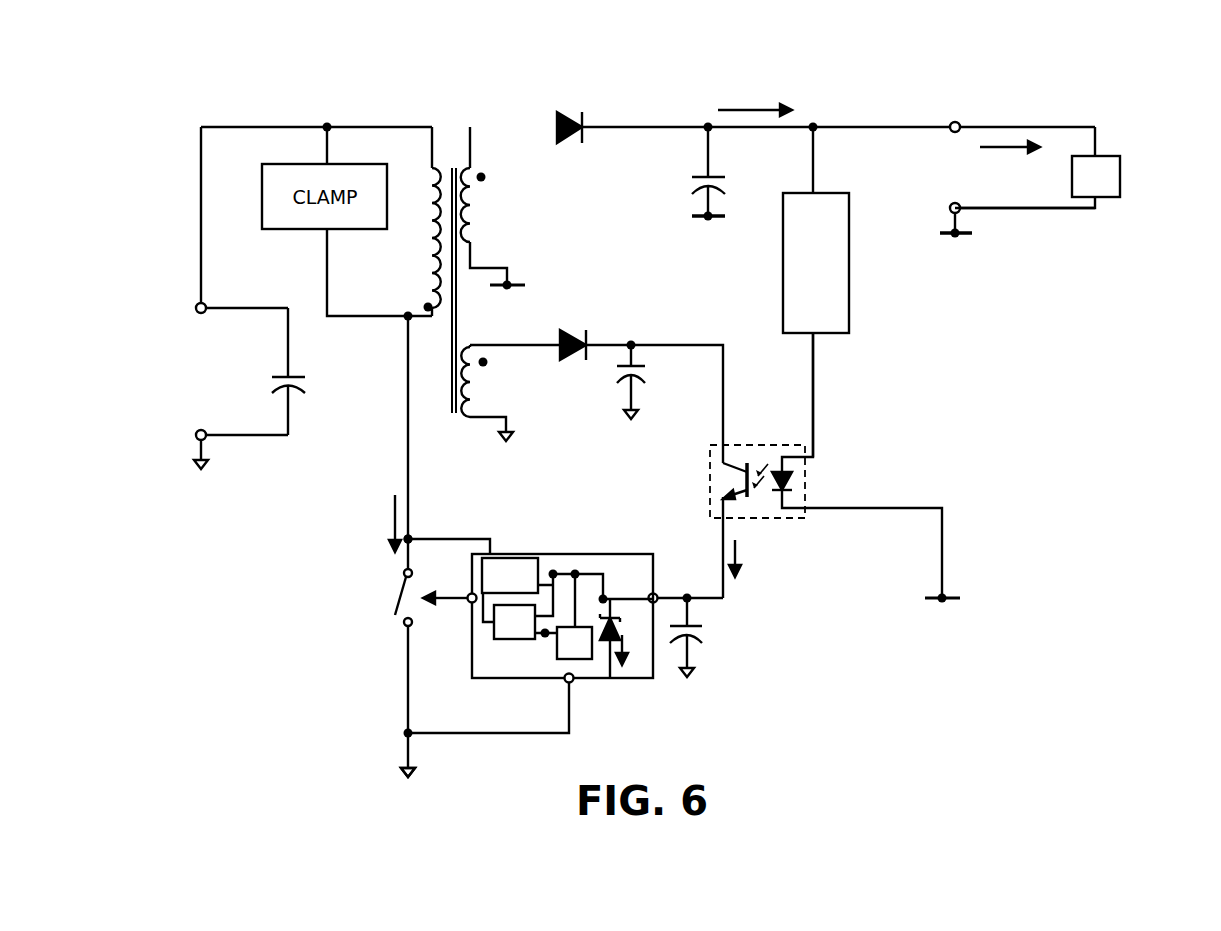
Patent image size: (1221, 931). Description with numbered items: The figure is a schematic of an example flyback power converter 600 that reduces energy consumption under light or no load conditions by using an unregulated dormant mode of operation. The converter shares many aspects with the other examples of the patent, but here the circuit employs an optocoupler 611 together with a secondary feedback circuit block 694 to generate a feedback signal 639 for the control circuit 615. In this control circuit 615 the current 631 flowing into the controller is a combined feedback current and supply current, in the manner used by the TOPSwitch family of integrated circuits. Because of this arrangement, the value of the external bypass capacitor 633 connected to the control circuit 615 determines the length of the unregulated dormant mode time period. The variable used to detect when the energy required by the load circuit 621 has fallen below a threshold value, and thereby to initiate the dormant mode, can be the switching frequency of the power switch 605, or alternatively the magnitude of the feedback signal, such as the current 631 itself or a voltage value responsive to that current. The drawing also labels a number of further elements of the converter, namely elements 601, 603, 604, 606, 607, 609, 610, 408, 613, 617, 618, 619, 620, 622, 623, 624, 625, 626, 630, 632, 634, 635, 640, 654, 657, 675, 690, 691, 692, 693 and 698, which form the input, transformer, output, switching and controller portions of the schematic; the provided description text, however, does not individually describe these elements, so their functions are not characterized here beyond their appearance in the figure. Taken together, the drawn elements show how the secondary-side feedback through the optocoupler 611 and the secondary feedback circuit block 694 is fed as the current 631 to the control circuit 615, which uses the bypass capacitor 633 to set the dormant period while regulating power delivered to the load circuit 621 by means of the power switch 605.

The power converter 600 is at (160, 80).
The input voltage source 601 is at (172, 390).
The primary winding 603 is at (428, 190).
The drain current 604 is at (392, 512).
The power switch 605 is at (398, 578).
The input capacitor 606 is at (270, 385).
The input return ground 607 is at (425, 775).
The energy transfer element / transformer T1 609 is at (452, 122).
The secondary winding 610 is at (482, 197).
The bias winding 408 is at (487, 372).
The optocoupler 611 is at (703, 480).
The bias rectifier diode 613 is at (576, 328).
The control circuit 615 is at (468, 673).
The output rectifier diode 617 is at (590, 133).
The output capacitor 618 is at (722, 172).
The output voltage 619 is at (908, 186).
The output current 620 is at (1009, 183).
The load circuit 621 is at (1128, 170).
The drive signal 622 is at (452, 604).
The feedback terminal 623 is at (658, 598).
The ground terminal 624 is at (573, 684).
The drive terminal 625 is at (467, 592).
The output return 626 is at (707, 224).
The feedback bias current path 630 is at (795, 410).
The current 631 is at (756, 577).
The feedback node 632 is at (554, 572).
The external bypass capacitor 633 is at (705, 634).
The drain node 634 is at (410, 535).
The control block 635 is at (518, 560).
The feedback signal 639 is at (634, 658).
The feedback circuit block 640 is at (590, 657).
The control block 654 is at (506, 640).
The internal node 657 is at (546, 638).
The bias capacitor 675 is at (647, 385).
The positive input terminal 690 is at (192, 320).
The negative input terminal 691 is at (192, 457).
The positive output terminal 692 is at (965, 122).
The negative output terminal 693 is at (944, 213).
The secondary feedback circuit block 694 is at (856, 310).
The secondary current 698 is at (782, 83).